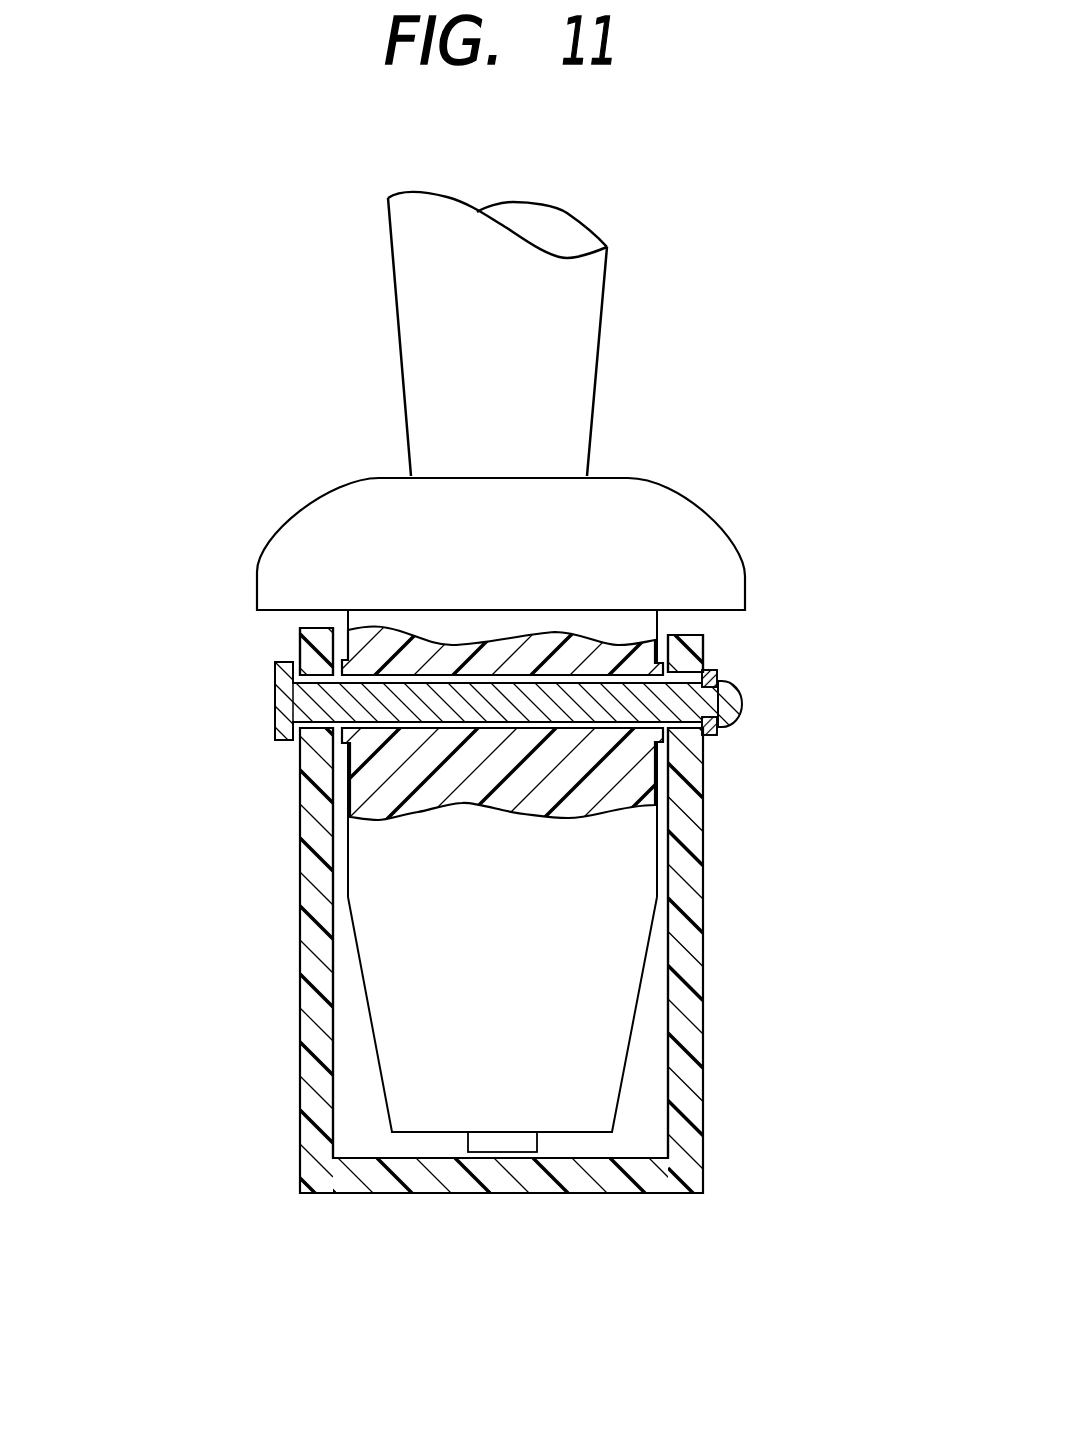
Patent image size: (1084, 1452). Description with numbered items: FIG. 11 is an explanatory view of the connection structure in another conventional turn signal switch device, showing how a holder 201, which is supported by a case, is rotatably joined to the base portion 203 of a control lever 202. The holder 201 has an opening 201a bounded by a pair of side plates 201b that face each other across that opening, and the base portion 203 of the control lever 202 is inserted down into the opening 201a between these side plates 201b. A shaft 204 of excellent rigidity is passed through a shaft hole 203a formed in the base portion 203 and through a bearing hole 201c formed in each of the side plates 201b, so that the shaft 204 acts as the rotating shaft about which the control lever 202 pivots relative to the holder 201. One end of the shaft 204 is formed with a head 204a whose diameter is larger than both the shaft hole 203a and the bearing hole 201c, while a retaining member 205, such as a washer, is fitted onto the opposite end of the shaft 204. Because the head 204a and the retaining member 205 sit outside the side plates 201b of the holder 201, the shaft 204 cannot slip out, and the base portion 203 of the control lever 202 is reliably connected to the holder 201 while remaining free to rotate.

The holder 201 is at (506, 940).
The opening 201a is at (655, 667).
The side plates 201b is at (307, 1105).
The bearing hole 201c is at (327, 678).
The control lever 202 is at (413, 328).
The base portion 203 is at (500, 822).
The shaft hole 203a is at (425, 670).
The shaft 204 is at (496, 641).
The head 204a is at (286, 742).
The retaining member 205 is at (710, 737).